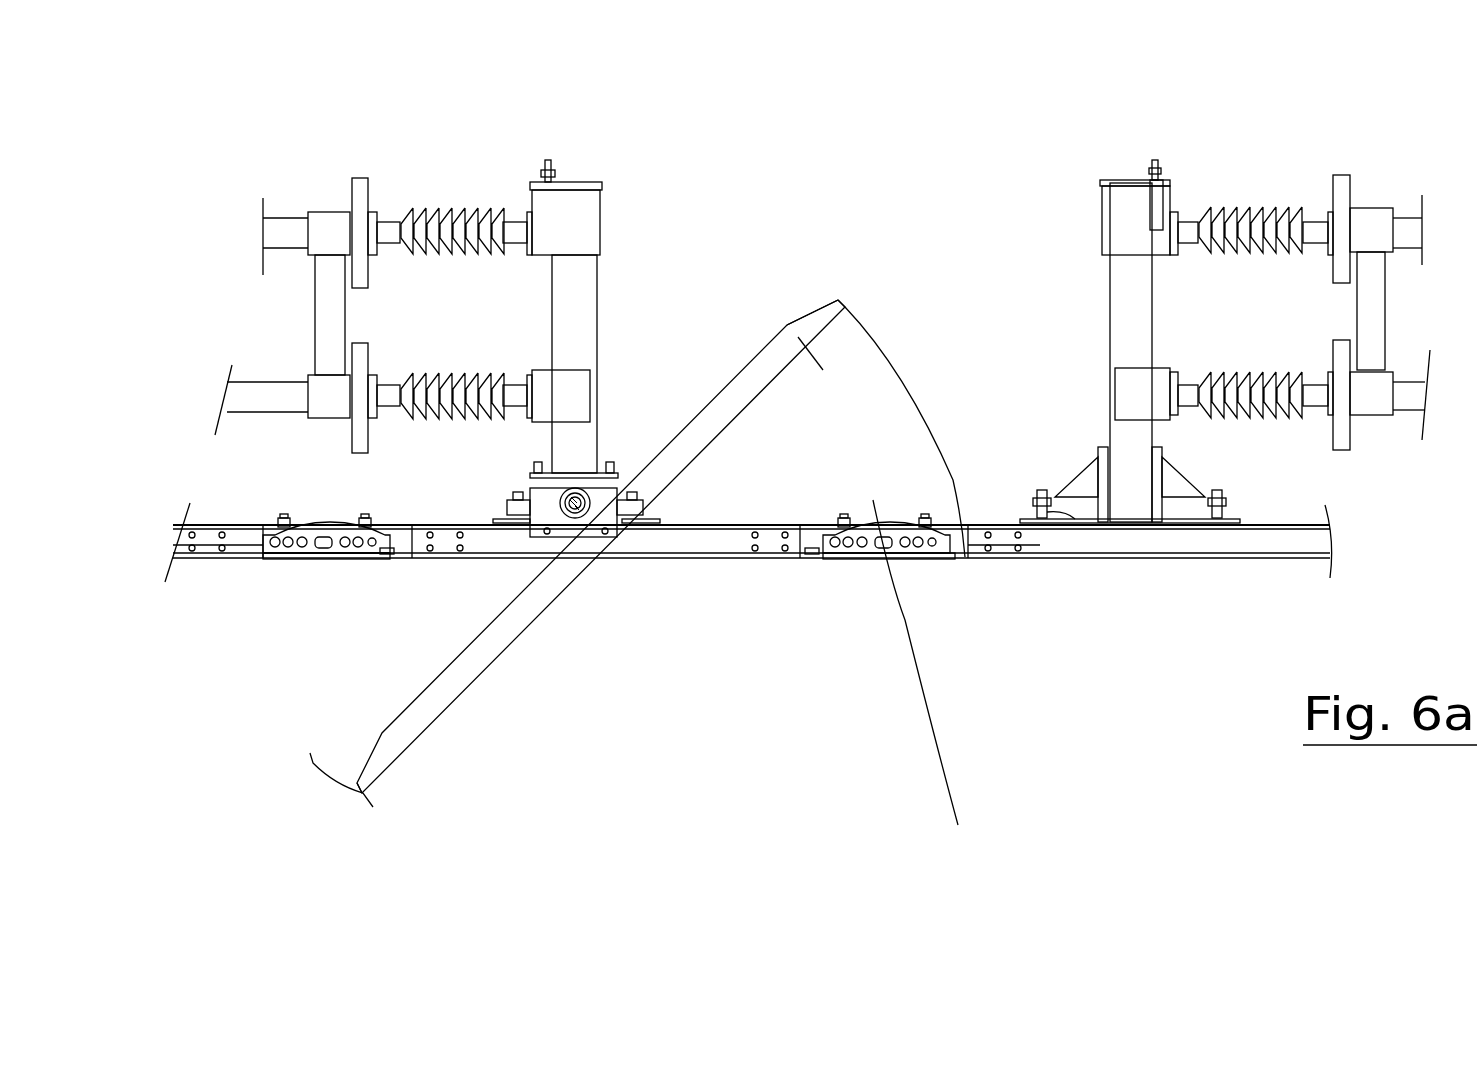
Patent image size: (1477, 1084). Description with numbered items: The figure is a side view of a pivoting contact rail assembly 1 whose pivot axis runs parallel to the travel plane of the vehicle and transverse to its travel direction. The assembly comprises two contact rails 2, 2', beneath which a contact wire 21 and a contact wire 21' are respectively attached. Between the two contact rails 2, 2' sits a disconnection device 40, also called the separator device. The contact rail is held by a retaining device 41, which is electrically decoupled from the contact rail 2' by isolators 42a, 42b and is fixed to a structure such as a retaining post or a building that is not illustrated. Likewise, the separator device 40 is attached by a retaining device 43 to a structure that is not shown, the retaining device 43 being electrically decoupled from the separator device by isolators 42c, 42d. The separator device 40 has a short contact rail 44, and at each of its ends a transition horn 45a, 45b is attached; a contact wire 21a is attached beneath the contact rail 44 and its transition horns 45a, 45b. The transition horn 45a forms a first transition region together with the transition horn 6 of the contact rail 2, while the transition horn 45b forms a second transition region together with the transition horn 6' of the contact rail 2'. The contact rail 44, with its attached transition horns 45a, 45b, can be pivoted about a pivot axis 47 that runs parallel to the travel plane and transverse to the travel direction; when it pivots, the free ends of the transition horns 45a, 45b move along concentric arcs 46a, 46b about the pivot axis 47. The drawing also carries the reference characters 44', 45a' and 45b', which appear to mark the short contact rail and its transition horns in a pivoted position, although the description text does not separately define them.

The contact rail assembly 1 is at (175, 643).
The contact rail 2 is at (225, 697).
The contact wire 21 is at (259, 707).
The contact rail 2' is at (1091, 701).
The contact wire 21' is at (1127, 707).
The contact wire 21a is at (748, 558).
The transition horn 6 is at (361, 497).
The transition horn 6' is at (948, 685).
The disconnection device 40 is at (654, 487).
The retaining device 41 is at (1234, 314).
The retaining device 43 is at (408, 289).
The isolator 42a is at (1255, 395).
The isolator 42b is at (1265, 210).
The isolator 42c is at (447, 230).
The isolator 42d is at (460, 396).
The short contact rail 44 is at (601, 585).
The strut upper part 44' is at (752, 279).
The transition horn 45a is at (430, 495).
The transition horn 45b is at (859, 705).
The pivot joint 45a' is at (425, 812).
The pivot joint 45b' is at (810, 236).
The concentric arc 46a is at (250, 553).
The concentric arc 46b is at (925, 393).
The pivot axis 47 is at (602, 462).